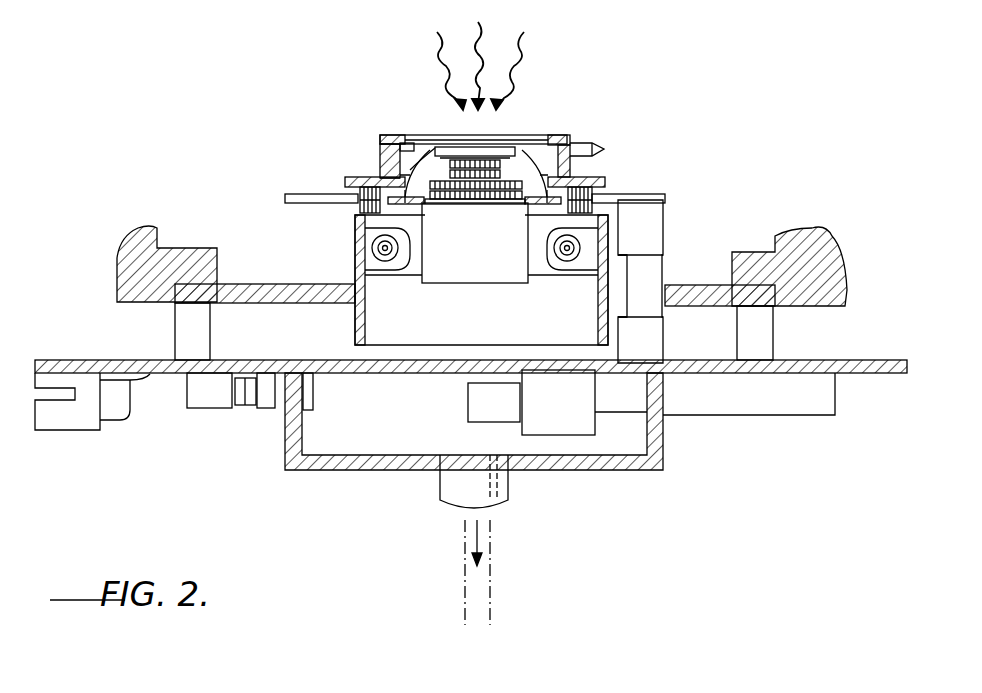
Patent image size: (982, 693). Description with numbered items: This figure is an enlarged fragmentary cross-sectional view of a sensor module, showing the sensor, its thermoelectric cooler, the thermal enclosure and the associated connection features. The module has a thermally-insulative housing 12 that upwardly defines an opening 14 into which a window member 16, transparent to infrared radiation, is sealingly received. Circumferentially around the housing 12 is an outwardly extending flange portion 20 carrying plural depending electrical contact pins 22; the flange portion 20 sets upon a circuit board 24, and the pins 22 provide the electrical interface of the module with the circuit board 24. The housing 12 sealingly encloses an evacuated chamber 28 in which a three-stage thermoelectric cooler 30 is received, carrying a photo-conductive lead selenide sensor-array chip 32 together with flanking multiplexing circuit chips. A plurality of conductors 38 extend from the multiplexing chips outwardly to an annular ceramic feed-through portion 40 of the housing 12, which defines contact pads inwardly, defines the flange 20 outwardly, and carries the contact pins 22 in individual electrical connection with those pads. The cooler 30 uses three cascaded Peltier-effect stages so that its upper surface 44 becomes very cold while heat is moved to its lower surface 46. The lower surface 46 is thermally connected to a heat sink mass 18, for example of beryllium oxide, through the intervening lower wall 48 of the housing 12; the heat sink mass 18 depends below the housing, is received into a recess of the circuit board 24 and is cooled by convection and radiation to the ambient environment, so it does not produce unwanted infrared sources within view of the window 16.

The thermally-insulative housing 12 is at (573, 140).
The opening 14 is at (548, 136).
The window member 16 is at (532, 137).
The heat sink mass 18 is at (527, 272).
The flange portion 20 is at (608, 180).
The electrical contact pins 22 is at (362, 190).
The circuit board 24 is at (624, 478).
The evacuated chamber 28 is at (430, 166).
The three-stage thermoelectric cooler 30 is at (398, 170).
The sensor-array chip 32 is at (461, 140).
The conductors 38 is at (427, 148).
The ceramic feed-through portion 40 is at (400, 175).
The upper surface 44 is at (480, 160).
The lower surface 46 is at (468, 204).
The lower wall 48 is at (430, 204).